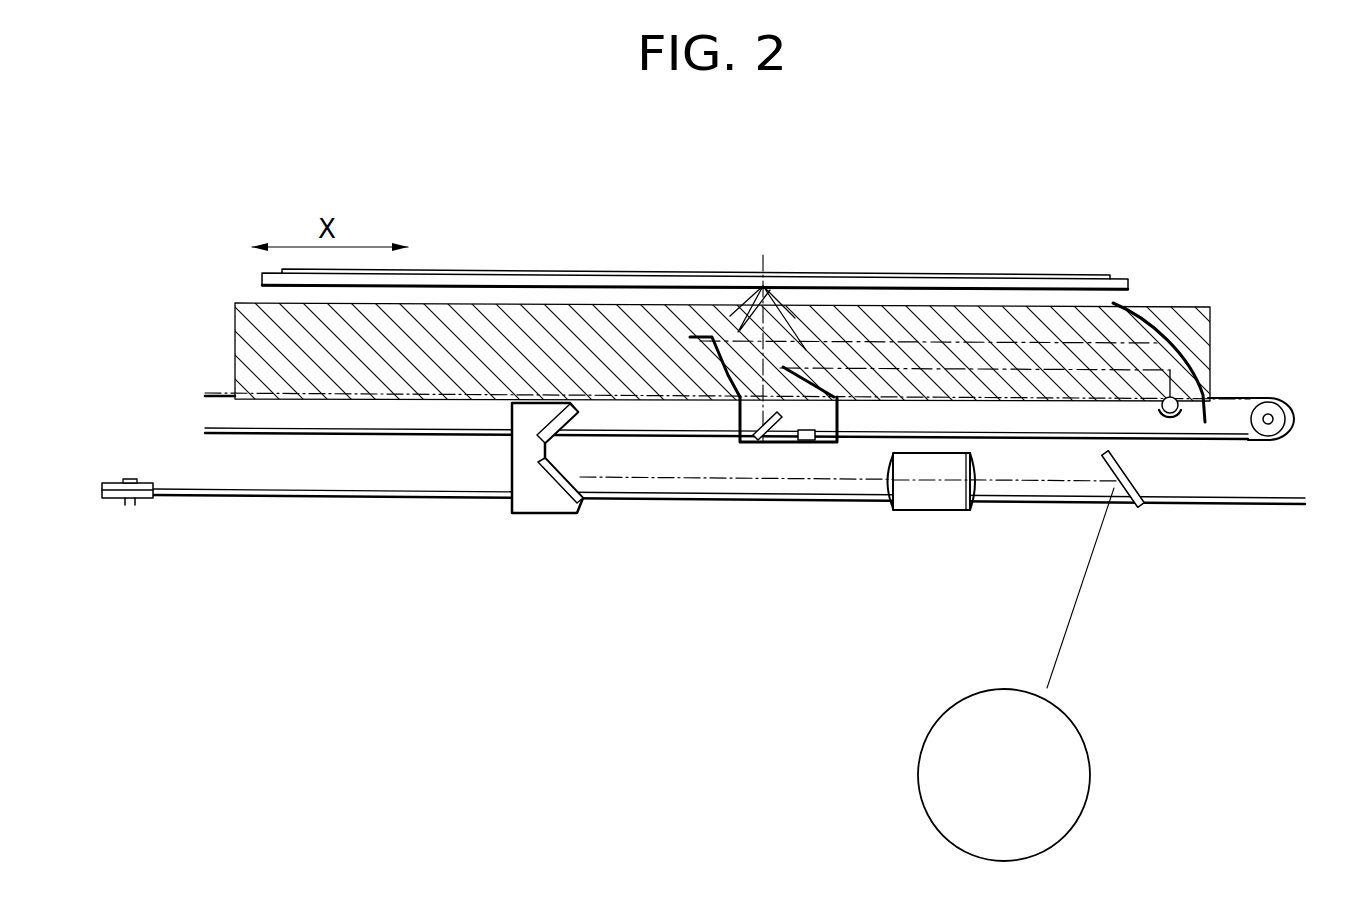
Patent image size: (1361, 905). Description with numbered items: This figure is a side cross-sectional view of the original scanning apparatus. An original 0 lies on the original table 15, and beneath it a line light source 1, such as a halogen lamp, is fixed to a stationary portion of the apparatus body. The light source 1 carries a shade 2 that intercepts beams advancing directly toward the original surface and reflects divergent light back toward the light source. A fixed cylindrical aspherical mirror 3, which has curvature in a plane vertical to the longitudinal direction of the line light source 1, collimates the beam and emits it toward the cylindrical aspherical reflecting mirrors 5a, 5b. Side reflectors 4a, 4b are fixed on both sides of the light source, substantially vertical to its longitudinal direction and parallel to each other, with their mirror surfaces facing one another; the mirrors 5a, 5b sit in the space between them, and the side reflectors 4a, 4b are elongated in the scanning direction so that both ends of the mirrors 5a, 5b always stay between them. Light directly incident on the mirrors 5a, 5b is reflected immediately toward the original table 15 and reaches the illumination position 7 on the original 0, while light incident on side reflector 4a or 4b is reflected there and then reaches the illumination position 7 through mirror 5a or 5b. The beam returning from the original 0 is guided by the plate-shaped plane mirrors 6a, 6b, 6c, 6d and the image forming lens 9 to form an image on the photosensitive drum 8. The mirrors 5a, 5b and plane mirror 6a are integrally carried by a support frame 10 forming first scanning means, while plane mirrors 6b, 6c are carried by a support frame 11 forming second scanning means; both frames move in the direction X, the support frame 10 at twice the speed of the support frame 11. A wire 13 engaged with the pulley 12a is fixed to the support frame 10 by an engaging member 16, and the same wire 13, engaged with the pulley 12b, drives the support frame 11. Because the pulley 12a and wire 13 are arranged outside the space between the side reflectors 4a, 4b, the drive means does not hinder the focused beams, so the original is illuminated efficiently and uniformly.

The original 0 is at (1013, 273).
The line light source 1 is at (1207, 425).
The shade 2 is at (1173, 413).
The fixed cylindrical aspherical mirror 3 is at (1148, 322).
The side reflector 4a is at (743, 349).
The side reflector 4b is at (1210, 346).
The cylindrical aspherical reflecting mirror 5a is at (815, 358).
The cylindrical aspherical reflecting mirror 5b is at (708, 360).
The plane mirror 6a is at (763, 447).
The plane mirror 6b is at (586, 440).
The plane mirror 6c is at (582, 516).
The plane mirror 6d is at (1139, 508).
The illumination position 7 is at (763, 272).
The photosensitive drum 8 is at (1090, 776).
The image forming lens 9 is at (945, 500).
The support frame 10 is at (826, 446).
The support frame 11 is at (523, 506).
The pulley 12a is at (1290, 414).
The pulley 12b is at (103, 486).
The wire 13 is at (247, 500).
The original table 15 is at (1118, 282).
The engaging member 16 is at (806, 446).